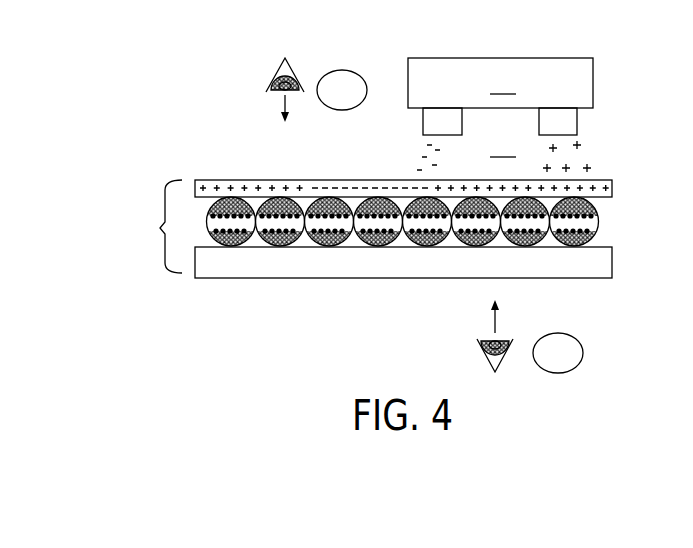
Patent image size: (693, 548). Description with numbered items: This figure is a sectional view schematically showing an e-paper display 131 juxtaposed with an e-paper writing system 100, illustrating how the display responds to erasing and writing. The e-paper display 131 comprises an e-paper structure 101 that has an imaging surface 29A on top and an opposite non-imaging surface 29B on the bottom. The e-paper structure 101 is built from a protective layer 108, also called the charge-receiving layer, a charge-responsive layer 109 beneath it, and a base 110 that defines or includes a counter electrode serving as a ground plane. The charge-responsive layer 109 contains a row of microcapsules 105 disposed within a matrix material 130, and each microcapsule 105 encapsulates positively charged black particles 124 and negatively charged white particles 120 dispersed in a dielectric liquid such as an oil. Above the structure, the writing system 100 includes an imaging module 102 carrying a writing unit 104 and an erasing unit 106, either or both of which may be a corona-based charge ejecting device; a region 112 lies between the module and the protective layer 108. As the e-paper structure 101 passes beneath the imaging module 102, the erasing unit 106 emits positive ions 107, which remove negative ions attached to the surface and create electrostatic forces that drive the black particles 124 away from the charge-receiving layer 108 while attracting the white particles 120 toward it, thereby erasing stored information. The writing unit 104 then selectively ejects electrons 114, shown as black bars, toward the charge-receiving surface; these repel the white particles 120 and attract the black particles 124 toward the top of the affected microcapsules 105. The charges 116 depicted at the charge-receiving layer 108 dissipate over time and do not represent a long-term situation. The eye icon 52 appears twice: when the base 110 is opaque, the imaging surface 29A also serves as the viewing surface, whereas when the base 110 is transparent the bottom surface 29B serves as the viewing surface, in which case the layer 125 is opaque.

The e-paper writing system 100 is at (184, 97).
The e-paper structure 101 is at (156, 226).
The imaging module 102 is at (500, 83).
The writing unit 104 is at (423, 126).
The microcapsules 105 is at (616, 225).
The erasing unit 106 is at (580, 122).
The positive ions 107 is at (592, 148).
The protective layer 108 is at (429, 160).
The charge-responsive layer 109 is at (403, 245).
The base 110 is at (403, 291).
The gap 112 is at (503, 147).
The electrons 114 is at (411, 165).
The charges 116 is at (283, 181).
The white particles 120 is at (595, 210).
The black particles 124 is at (603, 228).
The layer 125 is at (238, 181).
The matrix material 130 is at (352, 244).
The e-paper display 131 is at (148, 196).
The imaging surface 29A is at (291, 181).
The non-imaging surface 29B is at (270, 279).
The eye icon 52 is at (288, 65).